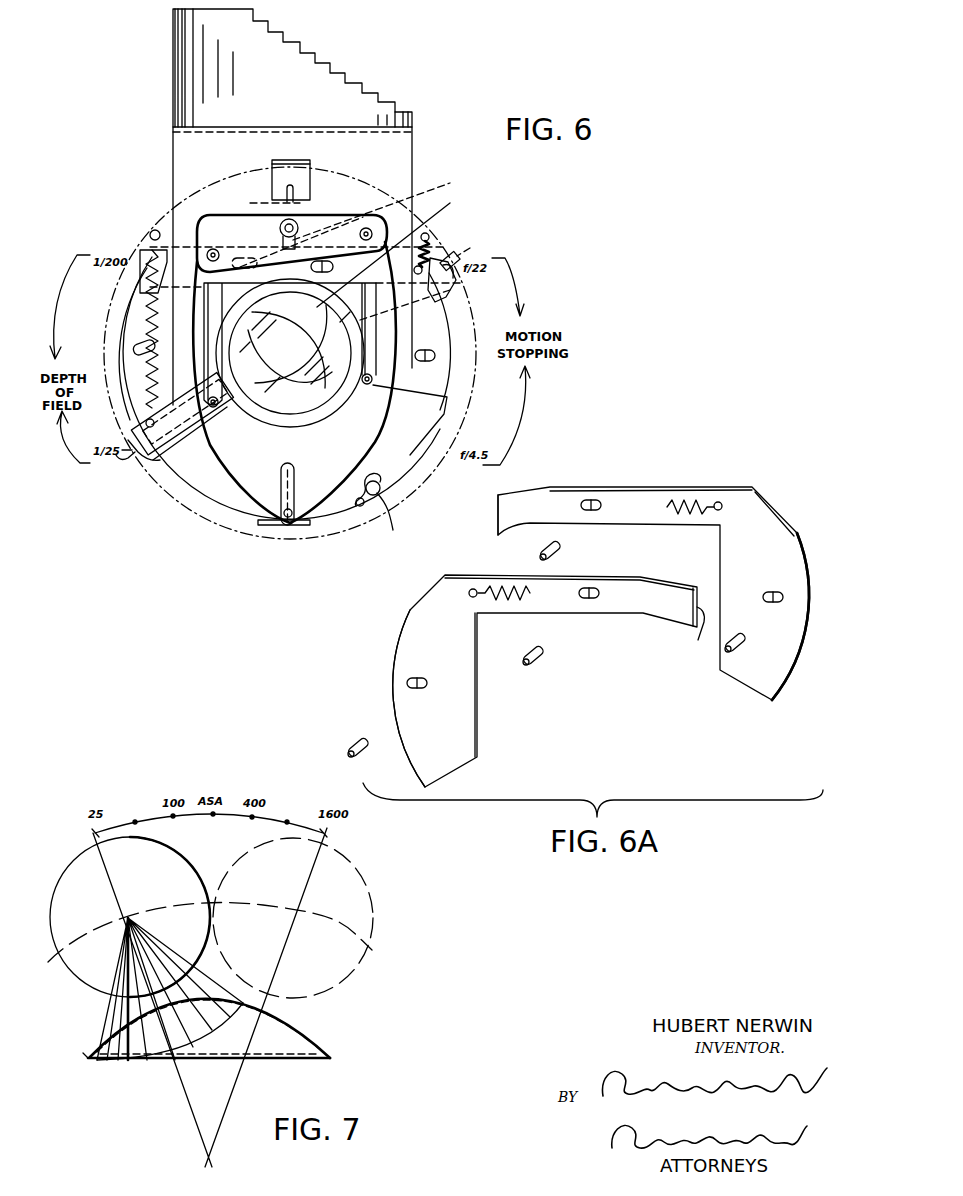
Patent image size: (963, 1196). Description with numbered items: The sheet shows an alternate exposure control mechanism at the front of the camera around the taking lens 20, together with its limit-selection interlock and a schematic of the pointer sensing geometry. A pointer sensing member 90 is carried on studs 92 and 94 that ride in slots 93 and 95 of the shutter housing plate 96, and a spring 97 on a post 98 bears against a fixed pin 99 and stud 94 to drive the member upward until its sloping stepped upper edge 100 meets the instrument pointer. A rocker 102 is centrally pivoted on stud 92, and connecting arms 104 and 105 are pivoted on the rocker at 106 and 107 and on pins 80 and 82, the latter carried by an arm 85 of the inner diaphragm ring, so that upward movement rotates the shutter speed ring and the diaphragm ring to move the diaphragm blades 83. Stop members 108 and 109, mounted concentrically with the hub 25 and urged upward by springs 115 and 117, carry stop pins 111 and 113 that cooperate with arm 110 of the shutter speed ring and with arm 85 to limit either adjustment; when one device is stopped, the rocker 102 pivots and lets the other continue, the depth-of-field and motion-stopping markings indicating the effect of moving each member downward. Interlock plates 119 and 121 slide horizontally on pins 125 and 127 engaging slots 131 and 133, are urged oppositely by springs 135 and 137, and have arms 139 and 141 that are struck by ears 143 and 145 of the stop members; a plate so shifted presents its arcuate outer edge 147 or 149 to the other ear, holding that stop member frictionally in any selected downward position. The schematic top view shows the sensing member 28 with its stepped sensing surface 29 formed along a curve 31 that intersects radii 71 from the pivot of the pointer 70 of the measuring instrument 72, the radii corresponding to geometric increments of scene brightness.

In FIG. 6, the taking lens 20 is at (295, 348).
In FIG. 6, the hub 25 is at (313, 422).
In FIG. 7, the sensing member 28 is at (297, 1059).
In FIG. 7, the sloping upper edge 29 is at (285, 1024).
In FIG. 7, the curve 31 is at (83, 1055).
In FIG. 7, the pointer 70 is at (116, 1061).
In FIG. 7, the radii 71 is at (115, 1012).
In FIG. 7, the measuring instrument 72 is at (130, 917).
In FIG. 6, the pin 80 is at (228, 412).
In FIG. 6, the pin 82 is at (363, 393).
In FIG. 6, the diaphragm blades 83 is at (290, 353).
In FIG. 6, the arm 85 is at (405, 405).
In FIG. 6, the pointer sensing member 90 is at (412, 138).
In FIG. 6, the stud 92 is at (298, 224).
In FIG. 6, the slot 93 is at (276, 203).
In FIG. 6, the stud 94 is at (288, 520).
In FIG. 6, the slot 95 is at (296, 474).
In FIG. 6, the shutter housing plate 96 is at (206, 528).
In FIG. 6, the spring 97 is at (262, 525).
In FIG. 6, the post 98 is at (393, 530).
In FIG. 6, the fixed pin 99 is at (357, 507).
In FIG. 6, the upper edge 100 is at (345, 80).
In FIG. 6, the rocker 102 is at (345, 218).
In FIG. 6, the connecting arm 104 is at (211, 251).
In FIG. 6, the connecting arm 105 is at (392, 244).
In FIG. 6, the pivot 106 is at (200, 275).
In FIG. 6, the pivot 107 is at (388, 218).
In FIG. 6, the stop member 108 is at (172, 478).
In FIG. 6, the stop member 109 is at (434, 306).
In FIG. 6, the arm 110 is at (183, 442).
In FIG. 6, the stop pin 111 is at (146, 422).
In FIG. 6, the stop pin 113 is at (452, 255).
In FIG. 6, the spring 115 is at (154, 235).
In FIG. 6, the spring 117 is at (431, 243).
In FIG. 6, the interlock plate 119 is at (140, 329).
In FIG. 6A, the interlock plate 119 is at (545, 681).
In FIG. 6, the interlock plate 121 is at (427, 367).
In FIG. 6A, the interlock plate 121 is at (653, 593).
In FIG. 6A, the pin 125 is at (545, 658).
In FIG. 6A, the pin 127 is at (558, 553).
In FIG. 6A, the horizontal slot 131 is at (593, 599).
In FIG. 6A, the horizontal slot 133 is at (593, 510).
In FIG. 6A, the spring 135 is at (508, 588).
In FIG. 6A, the spring 137 is at (686, 515).
In FIG. 6, the arm 139 is at (140, 257).
In FIG. 6A, the arm 139 is at (498, 520).
In FIG. 6, the arm 141 is at (445, 248).
In FIG. 6A, the arm 141 is at (698, 636).
In FIG. 6, the ear 143 is at (150, 470).
In FIG. 6, the ear 145 is at (470, 248).
In FIG. 6, the arcuate outer edge 147 is at (122, 330).
In FIG. 6A, the arcuate outer edge 147 is at (393, 650).
In FIG. 6, the arcuate outer edge 149 is at (448, 322).
In FIG. 6A, the arcuate outer edge 149 is at (790, 660).